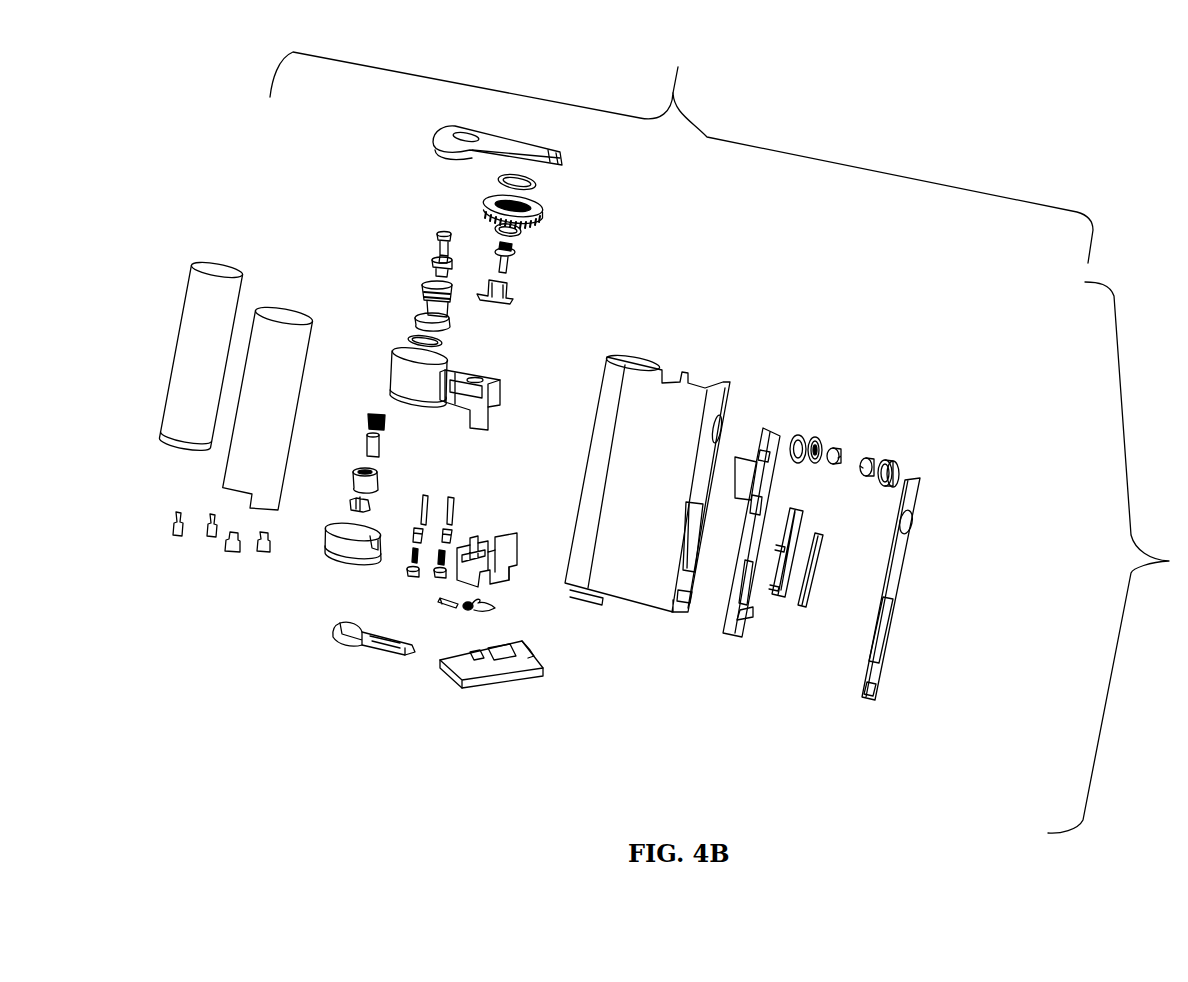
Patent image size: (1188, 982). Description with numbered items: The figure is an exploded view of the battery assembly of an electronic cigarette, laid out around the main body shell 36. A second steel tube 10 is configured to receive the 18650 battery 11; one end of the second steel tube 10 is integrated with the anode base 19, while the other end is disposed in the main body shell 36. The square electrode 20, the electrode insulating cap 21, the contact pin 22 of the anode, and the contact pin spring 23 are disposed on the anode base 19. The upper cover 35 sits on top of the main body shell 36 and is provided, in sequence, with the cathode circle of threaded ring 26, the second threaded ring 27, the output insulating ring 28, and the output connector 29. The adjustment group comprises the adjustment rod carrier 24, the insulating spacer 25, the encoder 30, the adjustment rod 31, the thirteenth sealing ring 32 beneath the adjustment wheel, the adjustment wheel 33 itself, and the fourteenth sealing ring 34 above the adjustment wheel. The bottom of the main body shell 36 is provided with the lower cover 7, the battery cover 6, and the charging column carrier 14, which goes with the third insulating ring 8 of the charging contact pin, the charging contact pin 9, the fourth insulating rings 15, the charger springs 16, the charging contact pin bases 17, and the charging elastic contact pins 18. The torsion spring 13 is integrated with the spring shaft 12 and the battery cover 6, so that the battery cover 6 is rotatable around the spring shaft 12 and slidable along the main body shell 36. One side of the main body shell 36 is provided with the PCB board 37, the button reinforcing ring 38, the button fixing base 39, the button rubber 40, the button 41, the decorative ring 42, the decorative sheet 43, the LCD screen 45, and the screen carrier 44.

The battery cover 6 is at (348, 647).
The lower cover 7 is at (492, 680).
The third insulating ring of charging contact pin 8 is at (257, 548).
The charging contact pin 9 is at (205, 538).
The second steel tube 10 is at (293, 308).
The 18650 battery 11 is at (192, 263).
The spring shaft 12 is at (448, 605).
The torsion spring 13 is at (495, 605).
The charging column carrier 14 is at (515, 577).
The fourth insulating rings 15 is at (407, 573).
The charger springs 16 is at (437, 553).
The charging contact pin bases 17 is at (430, 530).
The charging elastic contact pins 18 is at (435, 495).
The anode base 19 is at (332, 557).
The square electrode 20 is at (350, 507).
The electrode insulating cap 21 is at (380, 480).
The contact pin of anode 22 is at (382, 447).
The contact pin spring 23 is at (367, 415).
The adjustment rod carrier 24 is at (505, 385).
The insulating spacer 25 is at (448, 347).
The cathode circle of threaded ring 26 is at (417, 320).
The second threaded ring 27 is at (430, 287).
The output insulating ring 28 is at (433, 260).
The output connector 29 is at (437, 240).
The encoder 30 is at (513, 288).
The adjustment rod 31 is at (512, 260).
The thirteenth sealing ring beneath the adjustment wheel 32 is at (527, 232).
The adjustment wheel 33 is at (545, 205).
The fourteenth sealing ring above the adjustment wheel 34 is at (493, 181).
The upper cover 35 is at (427, 130).
The main body shell 36 is at (675, 363).
The PCB board 37 is at (800, 440).
The button reinforcing ring 38 is at (822, 437).
The button fixing base 39 is at (843, 453).
The button rubber 40 is at (875, 458).
The button 41 is at (880, 458).
The decorative ring 42 is at (903, 465).
The decorative sheet 43 is at (907, 560).
The screen carrier 44 is at (775, 605).
The LCD screen 45 is at (807, 610).